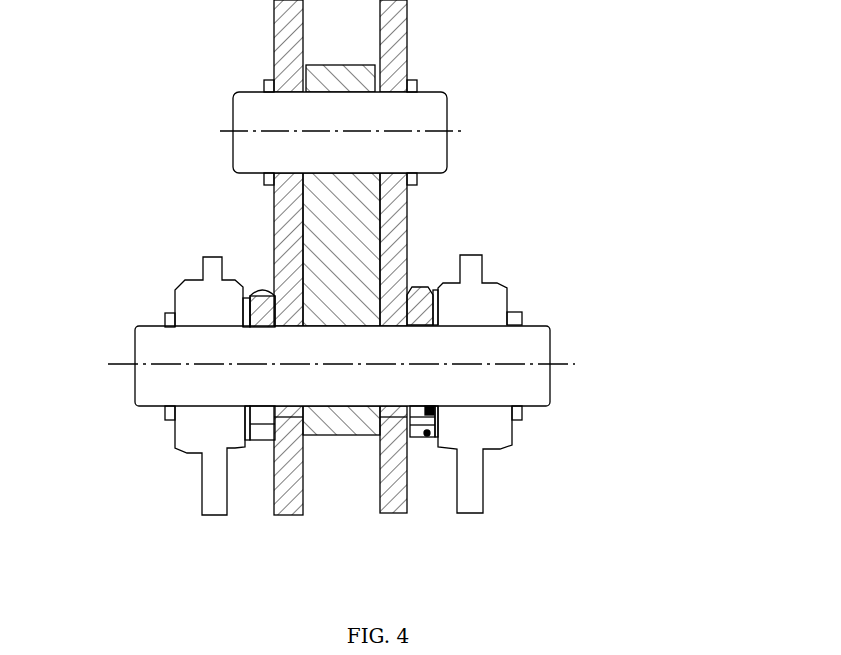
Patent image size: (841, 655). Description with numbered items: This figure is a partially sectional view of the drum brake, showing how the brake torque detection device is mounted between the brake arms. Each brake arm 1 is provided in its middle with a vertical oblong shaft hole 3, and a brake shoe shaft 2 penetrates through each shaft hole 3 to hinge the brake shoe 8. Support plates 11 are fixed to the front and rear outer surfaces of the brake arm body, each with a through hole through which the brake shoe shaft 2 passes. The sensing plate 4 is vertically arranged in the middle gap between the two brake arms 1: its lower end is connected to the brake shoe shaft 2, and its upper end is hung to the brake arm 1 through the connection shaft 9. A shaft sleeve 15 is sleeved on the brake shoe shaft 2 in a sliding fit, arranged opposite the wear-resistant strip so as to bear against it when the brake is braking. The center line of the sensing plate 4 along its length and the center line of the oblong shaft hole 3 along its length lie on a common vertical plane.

The brake arm 1 is at (390, 225).
The brake shoe shaft 2 is at (514, 349).
The shaft hole 3 is at (293, 317).
The sensing plate 4 is at (354, 79).
The brake shoe 8 is at (483, 292).
The connection shaft 9 is at (418, 117).
The support plate 11 is at (460, 448).
The shaft sleeve 15 is at (440, 412).